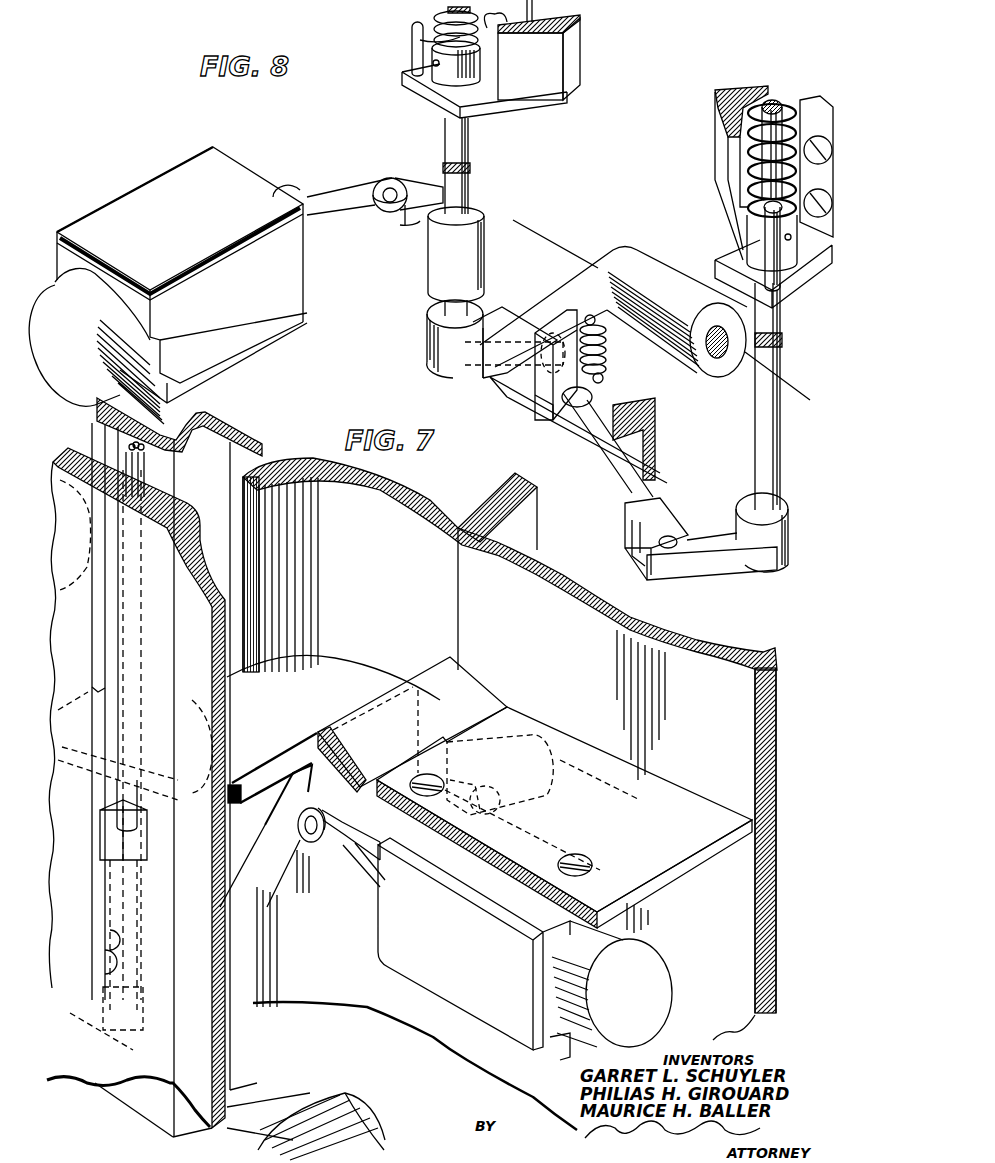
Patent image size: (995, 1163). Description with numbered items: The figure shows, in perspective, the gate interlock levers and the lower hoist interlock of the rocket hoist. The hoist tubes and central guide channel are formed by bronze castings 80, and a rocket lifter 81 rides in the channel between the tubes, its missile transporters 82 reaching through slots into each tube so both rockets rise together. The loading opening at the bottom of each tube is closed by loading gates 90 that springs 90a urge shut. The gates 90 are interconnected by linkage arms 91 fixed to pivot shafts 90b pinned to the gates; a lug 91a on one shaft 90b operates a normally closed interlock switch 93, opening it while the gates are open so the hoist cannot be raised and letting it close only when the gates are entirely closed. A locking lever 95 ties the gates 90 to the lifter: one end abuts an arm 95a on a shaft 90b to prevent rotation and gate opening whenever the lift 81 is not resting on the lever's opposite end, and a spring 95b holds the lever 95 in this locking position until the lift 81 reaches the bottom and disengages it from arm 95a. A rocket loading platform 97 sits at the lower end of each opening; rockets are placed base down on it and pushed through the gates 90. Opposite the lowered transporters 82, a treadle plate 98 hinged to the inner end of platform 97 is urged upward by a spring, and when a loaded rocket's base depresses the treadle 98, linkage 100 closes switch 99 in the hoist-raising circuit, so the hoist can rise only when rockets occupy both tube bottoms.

In FIG. 7, the bronze castings 80 is at (95, 418).
In FIG. 8, the rocket lifter 81 is at (795, 305).
In FIG. 7, the rocket lifter 81 is at (158, 735).
In FIG. 7, the missile transporters 82 is at (368, 636).
In FIG. 8, the loading gates 90 is at (580, 62).
In FIG. 8, the springs 90a is at (408, 16).
In FIG. 8, the pivot shafts 90b is at (446, 136).
In FIG. 8, the linkage arms 91 is at (428, 366).
In FIG. 8, the lug 91a is at (446, 256).
In FIG. 8, the interlock switch 93 is at (290, 276).
In FIG. 8, the locking lever 95 is at (595, 262).
In FIG. 8, the arm 95a is at (490, 385).
In FIG. 8, the spring 95b is at (610, 362).
In FIG. 7, the rocket loading platform 97 is at (668, 810).
In FIG. 7, the treadle plate 98 is at (463, 697).
In FIG. 7, the switch 99 is at (413, 918).
In FIG. 7, the linkage 100 is at (310, 850).